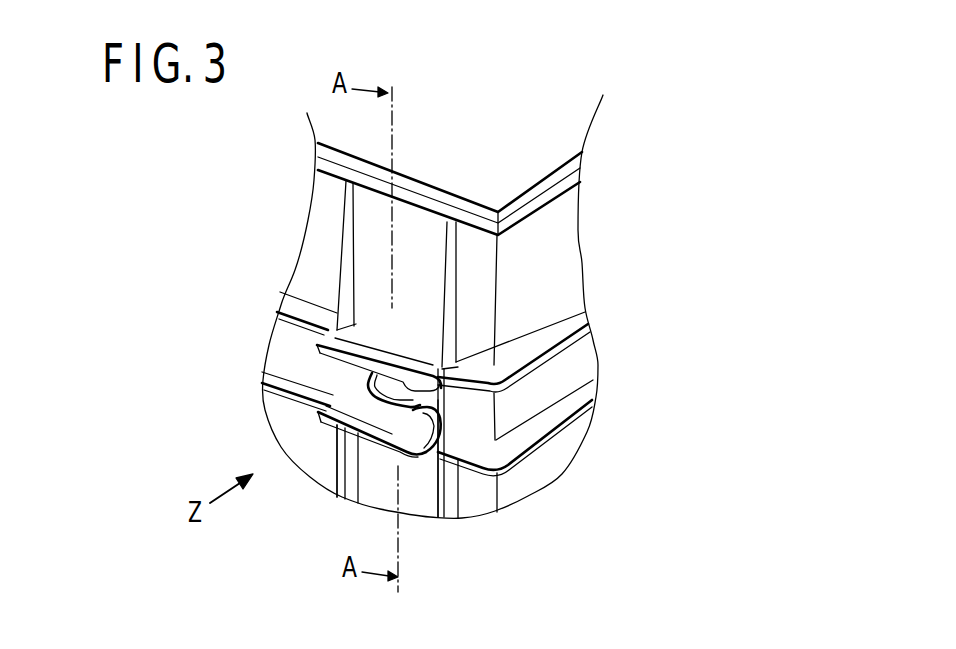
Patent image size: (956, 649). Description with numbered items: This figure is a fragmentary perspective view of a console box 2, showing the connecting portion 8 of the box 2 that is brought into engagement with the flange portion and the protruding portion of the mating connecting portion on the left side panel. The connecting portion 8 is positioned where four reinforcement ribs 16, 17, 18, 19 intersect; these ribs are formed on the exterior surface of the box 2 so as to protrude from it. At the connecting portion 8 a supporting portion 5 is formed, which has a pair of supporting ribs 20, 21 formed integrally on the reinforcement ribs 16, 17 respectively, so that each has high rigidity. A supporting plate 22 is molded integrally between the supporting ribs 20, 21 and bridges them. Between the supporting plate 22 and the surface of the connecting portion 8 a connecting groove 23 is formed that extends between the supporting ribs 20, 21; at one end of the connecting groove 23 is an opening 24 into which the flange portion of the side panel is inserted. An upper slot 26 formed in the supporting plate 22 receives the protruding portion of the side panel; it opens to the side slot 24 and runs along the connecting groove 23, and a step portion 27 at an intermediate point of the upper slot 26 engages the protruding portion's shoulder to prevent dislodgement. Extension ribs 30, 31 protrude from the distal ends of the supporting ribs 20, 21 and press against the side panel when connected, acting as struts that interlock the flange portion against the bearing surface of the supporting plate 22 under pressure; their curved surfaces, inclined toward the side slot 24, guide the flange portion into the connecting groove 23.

The box 2 is at (557, 265).
The supporting portion 5 is at (316, 363).
The connecting portion 8 is at (387, 303).
The reinforcement rib 16 is at (300, 305).
The reinforcement rib 17 is at (268, 378).
The reinforcement rib 18 is at (453, 327).
The reinforcement rib 19 is at (340, 250).
The supporting rib 20 is at (360, 345).
The supporting rib 21 is at (345, 445).
The supporting plate 22 is at (333, 452).
The connecting groove 23 is at (447, 403).
The opening 24 is at (470, 455).
The upper slot 26 is at (399, 448).
The step portion 27 is at (440, 470).
The extension rib 30 is at (320, 380).
The extension rib 31 is at (355, 440).